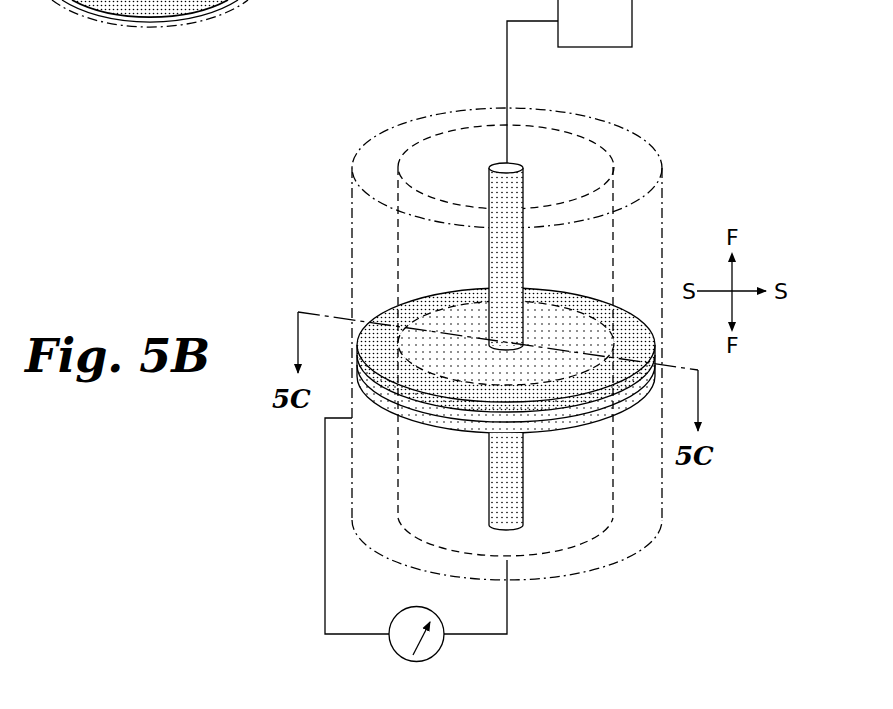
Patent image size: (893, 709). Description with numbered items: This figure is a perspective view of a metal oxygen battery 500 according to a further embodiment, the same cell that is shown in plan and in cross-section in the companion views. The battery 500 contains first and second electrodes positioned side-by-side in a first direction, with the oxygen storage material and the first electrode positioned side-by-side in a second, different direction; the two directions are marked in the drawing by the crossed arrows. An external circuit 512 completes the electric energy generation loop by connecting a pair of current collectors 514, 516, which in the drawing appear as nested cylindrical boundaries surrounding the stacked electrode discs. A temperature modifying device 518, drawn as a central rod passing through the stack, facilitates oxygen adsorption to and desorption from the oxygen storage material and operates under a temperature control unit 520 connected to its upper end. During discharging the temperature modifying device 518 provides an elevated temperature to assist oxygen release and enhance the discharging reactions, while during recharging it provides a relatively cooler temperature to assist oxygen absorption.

The metal oxygen battery 500 is at (613, 608).
The external circuit 512 is at (475, 636).
The current collector 514 is at (462, 128).
The current collector 516 is at (346, 150).
The temperature modifying device 518 is at (512, 165).
The temperature control unit 520 is at (569, 81).